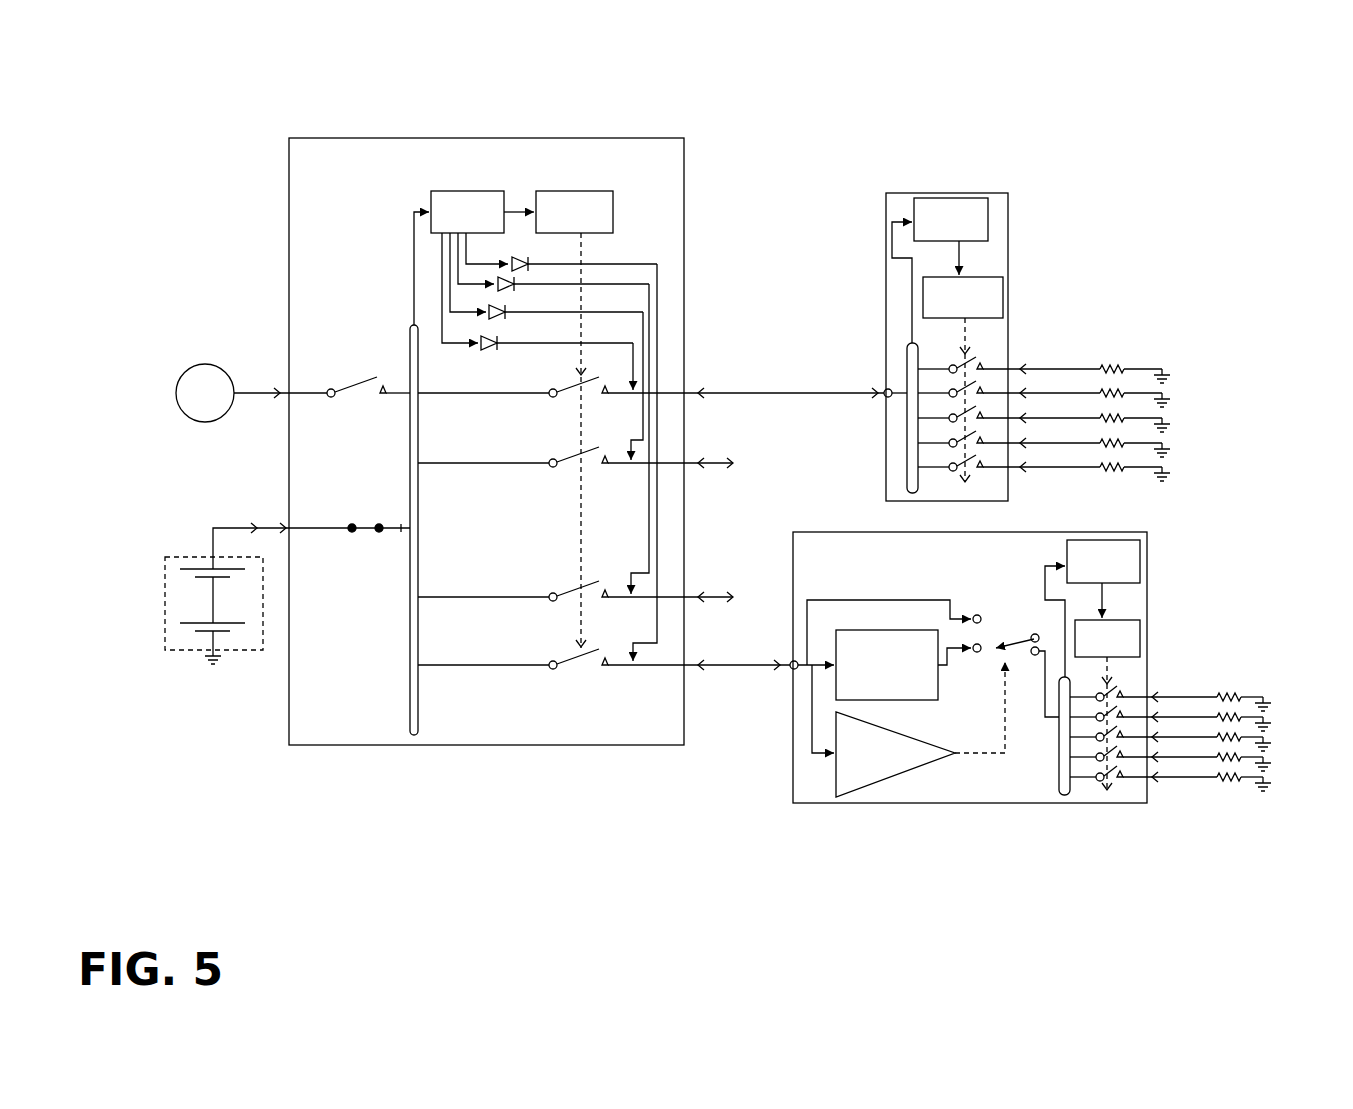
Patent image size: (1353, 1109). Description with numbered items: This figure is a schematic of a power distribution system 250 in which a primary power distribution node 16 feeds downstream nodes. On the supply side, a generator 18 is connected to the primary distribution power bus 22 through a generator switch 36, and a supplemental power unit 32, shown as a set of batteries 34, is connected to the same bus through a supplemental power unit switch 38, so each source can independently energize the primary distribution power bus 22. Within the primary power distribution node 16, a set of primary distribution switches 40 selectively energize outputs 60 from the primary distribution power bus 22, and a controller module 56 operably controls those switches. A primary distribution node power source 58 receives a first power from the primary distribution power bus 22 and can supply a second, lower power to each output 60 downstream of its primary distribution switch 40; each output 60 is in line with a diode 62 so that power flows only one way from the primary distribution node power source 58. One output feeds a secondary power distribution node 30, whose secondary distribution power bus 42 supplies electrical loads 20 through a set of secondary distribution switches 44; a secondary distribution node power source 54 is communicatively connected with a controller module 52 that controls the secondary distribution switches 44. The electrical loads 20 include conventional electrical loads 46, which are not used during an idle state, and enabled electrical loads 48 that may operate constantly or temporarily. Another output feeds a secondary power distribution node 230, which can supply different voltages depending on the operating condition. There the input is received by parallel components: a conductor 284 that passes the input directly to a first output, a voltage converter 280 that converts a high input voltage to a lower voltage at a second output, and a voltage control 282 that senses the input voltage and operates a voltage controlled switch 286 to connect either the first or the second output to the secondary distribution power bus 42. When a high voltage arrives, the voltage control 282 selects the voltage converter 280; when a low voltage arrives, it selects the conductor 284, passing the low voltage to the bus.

The primary power distribution node 16 is at (317, 137).
The power distribution system 250 is at (555, 80).
The generator 18 is at (232, 393).
The generator switch 36 is at (352, 365).
The primary distribution power bus 22 is at (404, 334).
The primary distribution node power source 58 is at (482, 212).
The controller module 56 is at (574, 419).
The diode 62 is at (540, 277).
The output 60 is at (636, 406).
The primary distribution switch 40 is at (555, 645).
The supplemental power unit 32 is at (163, 620).
The battery 34 is at (190, 642).
The supplemental power unit switch 38 is at (358, 562).
The secondary power distribution node 30 is at (900, 192).
The secondary distribution node power source 54 is at (1027, 408).
The controller module 52 is at (1031, 533).
The secondary distribution power bus 42 is at (901, 442).
The secondary distribution switch 44 is at (986, 451).
The conventional electrical load 46 is at (1124, 393).
The enabled electrical load 48 is at (1233, 757).
The electrical load 20 is at (1226, 660).
The secondary power distribution node 230 is at (1022, 804).
The voltage converter 280 is at (903, 665).
The voltage control 282 is at (920, 729).
The conductor 284 is at (862, 600).
The voltage controlled switch 286 is at (1006, 618).